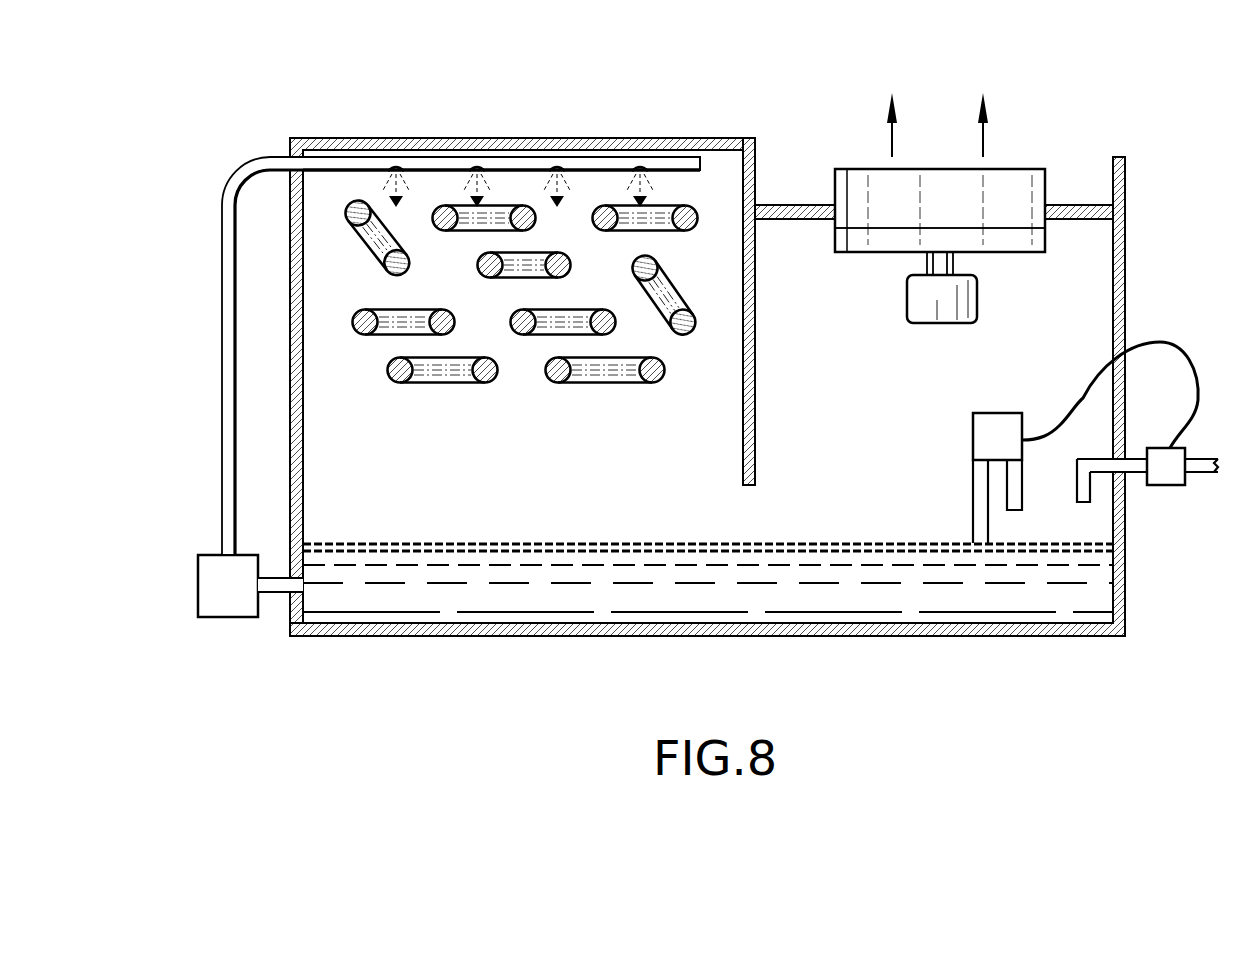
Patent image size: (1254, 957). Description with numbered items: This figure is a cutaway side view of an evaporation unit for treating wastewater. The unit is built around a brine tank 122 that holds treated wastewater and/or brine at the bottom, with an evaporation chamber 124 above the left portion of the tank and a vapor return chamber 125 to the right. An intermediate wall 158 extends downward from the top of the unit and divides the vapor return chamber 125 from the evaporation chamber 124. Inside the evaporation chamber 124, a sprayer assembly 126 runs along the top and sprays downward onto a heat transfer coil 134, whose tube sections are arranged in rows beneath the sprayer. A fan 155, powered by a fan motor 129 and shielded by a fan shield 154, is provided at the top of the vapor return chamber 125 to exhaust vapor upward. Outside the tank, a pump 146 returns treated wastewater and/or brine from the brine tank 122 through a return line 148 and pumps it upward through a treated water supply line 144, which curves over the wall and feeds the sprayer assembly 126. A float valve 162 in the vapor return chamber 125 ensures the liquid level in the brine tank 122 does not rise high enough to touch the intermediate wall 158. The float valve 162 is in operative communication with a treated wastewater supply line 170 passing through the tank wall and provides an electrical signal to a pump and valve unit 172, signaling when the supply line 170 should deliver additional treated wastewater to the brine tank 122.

The brine tank 122 is at (693, 623).
The evaporation chamber 124 is at (303, 440).
The vapor return chamber 125 is at (1112, 322).
The sprayer assembly 126 is at (353, 160).
The fan motor 129 is at (907, 298).
The heat transfer coil 134 is at (651, 382).
The treated water supply line 144 is at (222, 318).
The pump 146 is at (233, 617).
The return line 148 is at (277, 592).
The fan shield 154 is at (835, 178).
The fan 155 is at (1003, 253).
The intermediate wall 158 is at (755, 373).
The float valve 162 is at (973, 435).
The treated wastewater supply line 170 is at (1130, 474).
The pump and valve unit 172 is at (1170, 487).